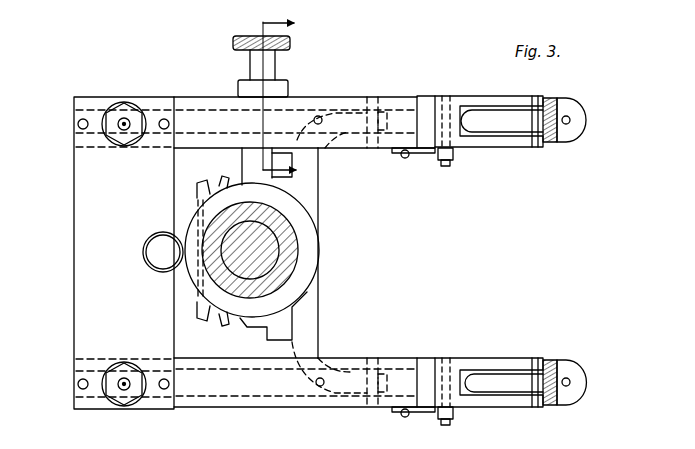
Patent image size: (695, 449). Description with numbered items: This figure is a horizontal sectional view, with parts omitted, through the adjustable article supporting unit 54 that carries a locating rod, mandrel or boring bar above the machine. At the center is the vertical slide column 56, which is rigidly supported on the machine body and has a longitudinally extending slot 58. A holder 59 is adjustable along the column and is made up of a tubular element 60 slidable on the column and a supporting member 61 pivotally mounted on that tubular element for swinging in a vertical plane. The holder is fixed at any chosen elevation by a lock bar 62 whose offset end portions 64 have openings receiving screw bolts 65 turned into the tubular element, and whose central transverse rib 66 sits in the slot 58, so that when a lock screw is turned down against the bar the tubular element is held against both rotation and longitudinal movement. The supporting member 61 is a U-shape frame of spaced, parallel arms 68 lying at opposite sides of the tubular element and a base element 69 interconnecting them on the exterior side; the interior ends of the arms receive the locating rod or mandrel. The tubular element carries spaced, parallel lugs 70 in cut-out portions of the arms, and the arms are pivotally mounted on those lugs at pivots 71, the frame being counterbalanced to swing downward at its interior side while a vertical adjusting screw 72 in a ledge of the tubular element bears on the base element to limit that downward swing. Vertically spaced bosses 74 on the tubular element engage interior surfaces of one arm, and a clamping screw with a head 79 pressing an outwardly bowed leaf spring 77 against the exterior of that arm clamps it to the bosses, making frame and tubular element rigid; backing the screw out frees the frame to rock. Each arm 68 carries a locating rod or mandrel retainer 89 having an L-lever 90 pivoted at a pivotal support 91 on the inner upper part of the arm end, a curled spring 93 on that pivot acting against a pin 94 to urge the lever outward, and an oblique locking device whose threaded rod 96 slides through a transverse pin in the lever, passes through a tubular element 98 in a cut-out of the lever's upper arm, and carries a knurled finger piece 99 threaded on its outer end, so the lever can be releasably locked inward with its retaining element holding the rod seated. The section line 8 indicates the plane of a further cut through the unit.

The section line 8- 8 is at (288, 99).
The adjustable article supporting unit 54 is at (392, 266).
The vertical slide column 56 is at (255, 293).
The longitudinally extending slot 58 is at (220, 254).
The holder 59 is at (305, 290).
The tubular element 60 is at (313, 248).
The supporting member 61 is at (85, 332).
The lock bar 62 is at (197, 283).
The offset end portions 64 is at (222, 180).
The screw bolts 65 is at (206, 184).
The transverse rib 66 is at (224, 249).
The spaced, parallel arms 68 is at (207, 97).
The base element 69 is at (86, 252).
The spaced, parallel lugs 70 is at (345, 137).
The pivotal mounting 71 is at (388, 100).
The vertical adjusting screw 72 is at (165, 249).
The vertically spaced bosses 74 is at (246, 150).
The outwardly bowed leaf spring 77 is at (289, 89).
The head 79 is at (274, 67).
The locating rod or mandrel retainer 89 is at (553, 333).
The L-lever 90 is at (493, 148).
The pivotal support 91 is at (445, 97).
The curled spring 93 is at (438, 158).
The pin 94 is at (405, 157).
The threaded rod 96 is at (572, 120).
The tubular element 98 is at (502, 113).
The knurled finger piece 99 is at (562, 142).